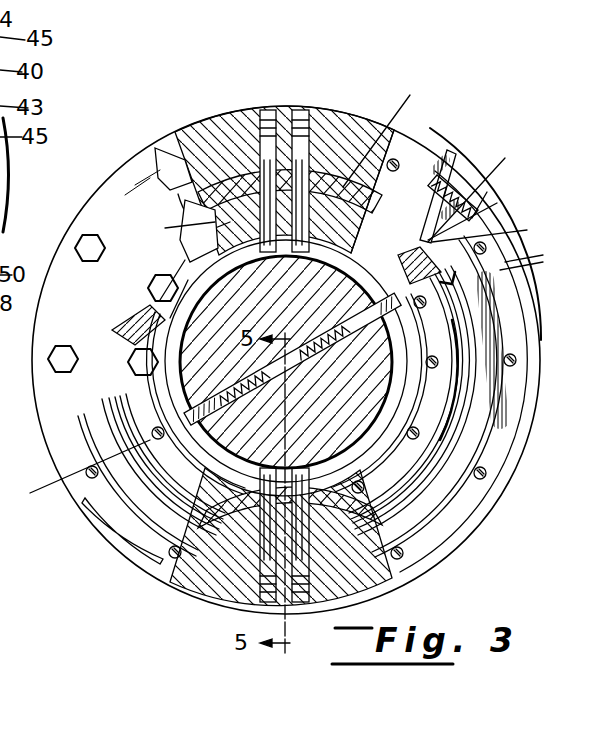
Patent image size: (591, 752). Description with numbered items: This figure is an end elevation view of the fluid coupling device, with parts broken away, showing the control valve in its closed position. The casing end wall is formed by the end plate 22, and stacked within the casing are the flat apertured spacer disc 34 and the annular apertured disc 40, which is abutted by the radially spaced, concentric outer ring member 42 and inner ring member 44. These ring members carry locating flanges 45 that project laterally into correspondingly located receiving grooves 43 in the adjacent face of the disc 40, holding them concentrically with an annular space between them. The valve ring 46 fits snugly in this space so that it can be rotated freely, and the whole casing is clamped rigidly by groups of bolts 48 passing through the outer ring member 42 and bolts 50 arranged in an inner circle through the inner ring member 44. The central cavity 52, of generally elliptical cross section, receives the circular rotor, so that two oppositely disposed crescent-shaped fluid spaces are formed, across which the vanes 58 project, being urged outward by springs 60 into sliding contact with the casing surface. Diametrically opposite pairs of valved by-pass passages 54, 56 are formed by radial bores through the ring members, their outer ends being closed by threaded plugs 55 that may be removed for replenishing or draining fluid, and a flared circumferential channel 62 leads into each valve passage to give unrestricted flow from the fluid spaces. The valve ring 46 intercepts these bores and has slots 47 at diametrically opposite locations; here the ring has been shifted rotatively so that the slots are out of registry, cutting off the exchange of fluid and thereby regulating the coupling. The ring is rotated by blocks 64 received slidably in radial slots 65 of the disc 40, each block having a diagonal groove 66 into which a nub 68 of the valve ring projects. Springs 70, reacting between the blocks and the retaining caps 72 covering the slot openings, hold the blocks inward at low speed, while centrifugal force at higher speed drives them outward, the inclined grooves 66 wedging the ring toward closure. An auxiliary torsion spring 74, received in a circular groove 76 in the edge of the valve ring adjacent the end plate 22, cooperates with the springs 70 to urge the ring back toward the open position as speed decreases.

The end plate 22 is at (108, 190).
The spacer disc 34 is at (430, 268).
The annular apertured disc 40 is at (400, 160).
The outer ring member 42 is at (340, 135).
The receiving grooves 43 is at (168, 160).
The inner ring member 44 is at (318, 130).
The locating flanges 45 is at (287, 373).
The valve ring 46 is at (247, 185).
The slots 47 is at (186, 610).
The bolts 48 is at (516, 358).
The bolts 50 is at (413, 427).
The central cavity 52 is at (150, 305).
The valved by-pass passages 54 is at (185, 236).
The threaded plugs 55 is at (296, 112).
The valved by-pass passages 56 is at (402, 553).
The vanes 58 is at (426, 302).
The springs 60 is at (405, 340).
The flared circumferential channel 62 is at (258, 261).
The blocks 64 is at (497, 203).
The radial slots 65 is at (487, 192).
The diagonal grooves 66 is at (462, 175).
The nubs 68 is at (493, 229).
The springs 70 is at (505, 158).
The retaining caps 72 is at (440, 160).
The auxiliary torsion spring 74 is at (460, 385).
The circular groove 76 is at (455, 320).